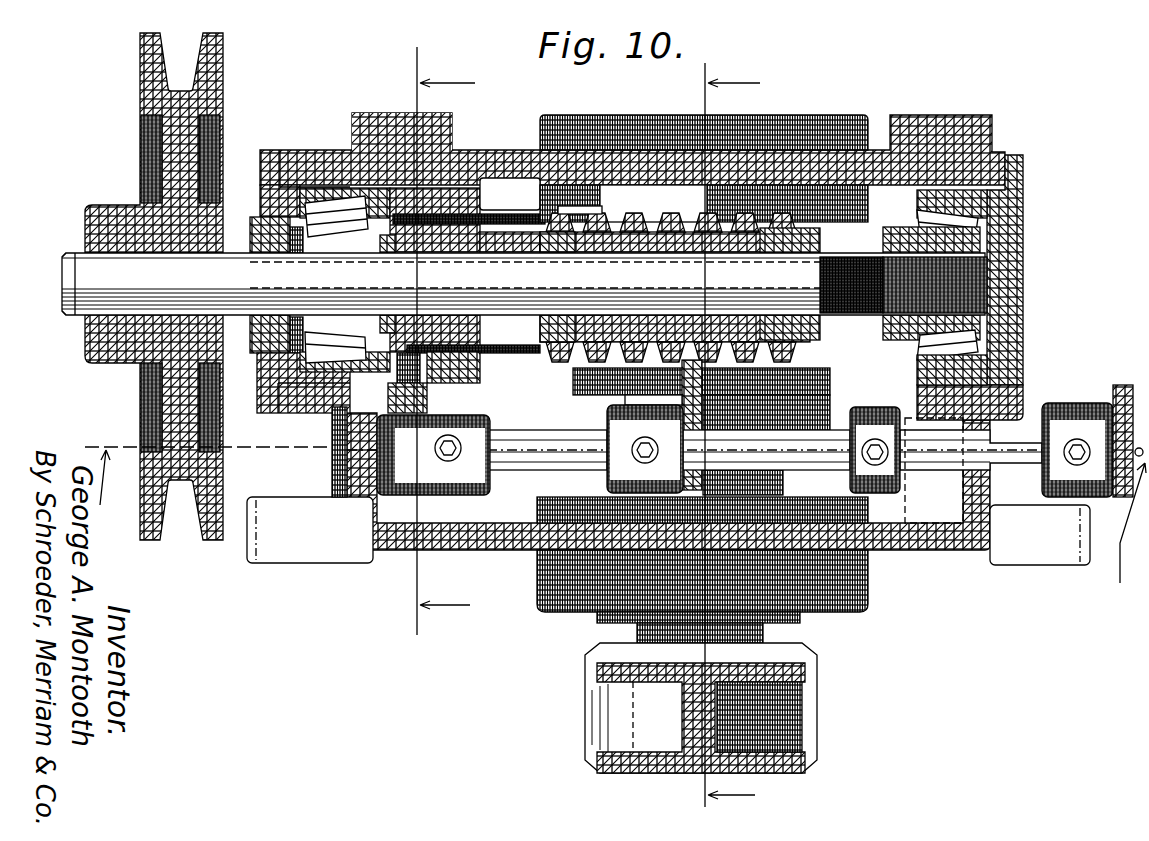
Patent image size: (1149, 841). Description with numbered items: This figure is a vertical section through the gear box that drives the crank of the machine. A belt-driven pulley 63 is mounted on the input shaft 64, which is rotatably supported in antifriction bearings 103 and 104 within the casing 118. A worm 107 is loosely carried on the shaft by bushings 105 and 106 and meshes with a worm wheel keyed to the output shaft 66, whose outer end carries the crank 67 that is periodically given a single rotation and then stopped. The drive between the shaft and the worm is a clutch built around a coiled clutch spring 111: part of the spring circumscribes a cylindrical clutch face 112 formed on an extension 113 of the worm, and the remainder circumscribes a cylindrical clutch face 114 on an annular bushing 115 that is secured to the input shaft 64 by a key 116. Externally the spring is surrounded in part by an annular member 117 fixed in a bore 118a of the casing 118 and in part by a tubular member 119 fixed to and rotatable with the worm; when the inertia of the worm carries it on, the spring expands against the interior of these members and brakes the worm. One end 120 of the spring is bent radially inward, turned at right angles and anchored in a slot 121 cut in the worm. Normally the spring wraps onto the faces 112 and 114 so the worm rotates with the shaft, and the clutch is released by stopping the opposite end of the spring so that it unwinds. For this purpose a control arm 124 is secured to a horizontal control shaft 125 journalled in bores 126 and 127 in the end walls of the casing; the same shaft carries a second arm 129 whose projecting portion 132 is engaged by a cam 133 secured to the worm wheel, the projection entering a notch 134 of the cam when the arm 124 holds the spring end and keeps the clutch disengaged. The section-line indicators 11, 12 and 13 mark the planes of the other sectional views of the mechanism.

The pulley 63 is at (208, 80).
The input shaft 64 is at (253, 270).
The antifriction bearing 103 is at (318, 190).
The antifriction bearing 104 is at (967, 202).
The bushing 105 is at (510, 242).
The bushing 106 is at (738, 253).
The worm 107 is at (648, 217).
The coiled clutch spring 111 is at (510, 158).
The cylindrical clutch face 112 is at (520, 250).
The extension on the worm 113 is at (608, 317).
The cylindrical clutch face 114 is at (422, 242).
The annular bushing 115 is at (425, 245).
The key 116 is at (382, 260).
The annular member 117 is at (487, 142).
The casing 118 is at (503, 537).
The bore 118a is at (452, 125).
The tubular member 119 is at (557, 160).
The end of the clutch spring 120 is at (573, 210).
The slot 121 is at (577, 233).
The control arm 124 is at (400, 470).
The control shaft 125 is at (520, 437).
The bore 126 is at (322, 483).
The bore 127 is at (917, 473).
The second arm 129 is at (683, 455).
The projecting portion 132 is at (688, 380).
The cam 133 is at (575, 378).
The notch 134 is at (665, 377).
The output shaft 66 is at (740, 635).
The crank 67 is at (797, 687).
The section line 11 is at (746, 435).
The section line 12 is at (460, 341).
The section line 13 is at (615, 529).